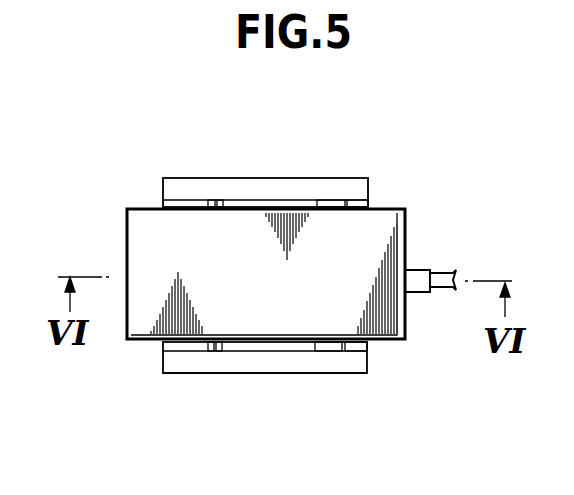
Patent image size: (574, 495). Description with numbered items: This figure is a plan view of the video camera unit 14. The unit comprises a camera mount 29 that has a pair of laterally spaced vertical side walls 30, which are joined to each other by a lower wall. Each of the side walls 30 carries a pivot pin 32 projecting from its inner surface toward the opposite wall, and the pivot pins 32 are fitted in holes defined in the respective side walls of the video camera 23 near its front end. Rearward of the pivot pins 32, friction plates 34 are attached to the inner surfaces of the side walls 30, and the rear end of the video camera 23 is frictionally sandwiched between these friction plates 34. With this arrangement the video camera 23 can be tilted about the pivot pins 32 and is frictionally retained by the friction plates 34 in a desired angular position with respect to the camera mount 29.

The video camera unit 14 is at (410, 207).
The video camera 23 is at (380, 252).
The camera mount 29 is at (307, 386).
The side walls 30 is at (263, 188).
The pivot pins 32 is at (217, 200).
The friction plates 34 is at (333, 205).